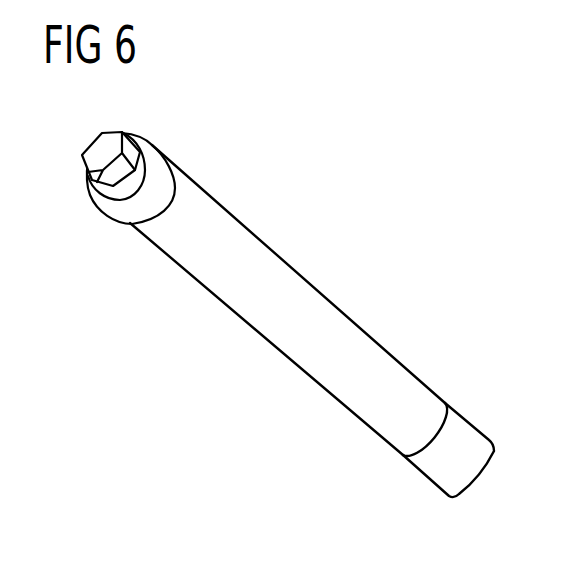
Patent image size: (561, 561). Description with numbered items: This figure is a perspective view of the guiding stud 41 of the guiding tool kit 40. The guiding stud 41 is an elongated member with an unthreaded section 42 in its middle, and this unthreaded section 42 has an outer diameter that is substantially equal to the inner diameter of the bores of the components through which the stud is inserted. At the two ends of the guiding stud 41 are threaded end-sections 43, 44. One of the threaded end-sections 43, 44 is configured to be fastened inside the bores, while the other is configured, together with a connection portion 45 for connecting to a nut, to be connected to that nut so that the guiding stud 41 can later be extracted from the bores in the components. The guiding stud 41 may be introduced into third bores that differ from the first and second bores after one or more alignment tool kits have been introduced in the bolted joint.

The guiding tool kit 40 is at (303, 172).
The guiding stud 41 is at (177, 253).
The unthreaded section 42 is at (317, 298).
The threaded end-section 43 is at (430, 465).
The threaded end-section 44 is at (113, 205).
The connection portion 45 is at (97, 150).